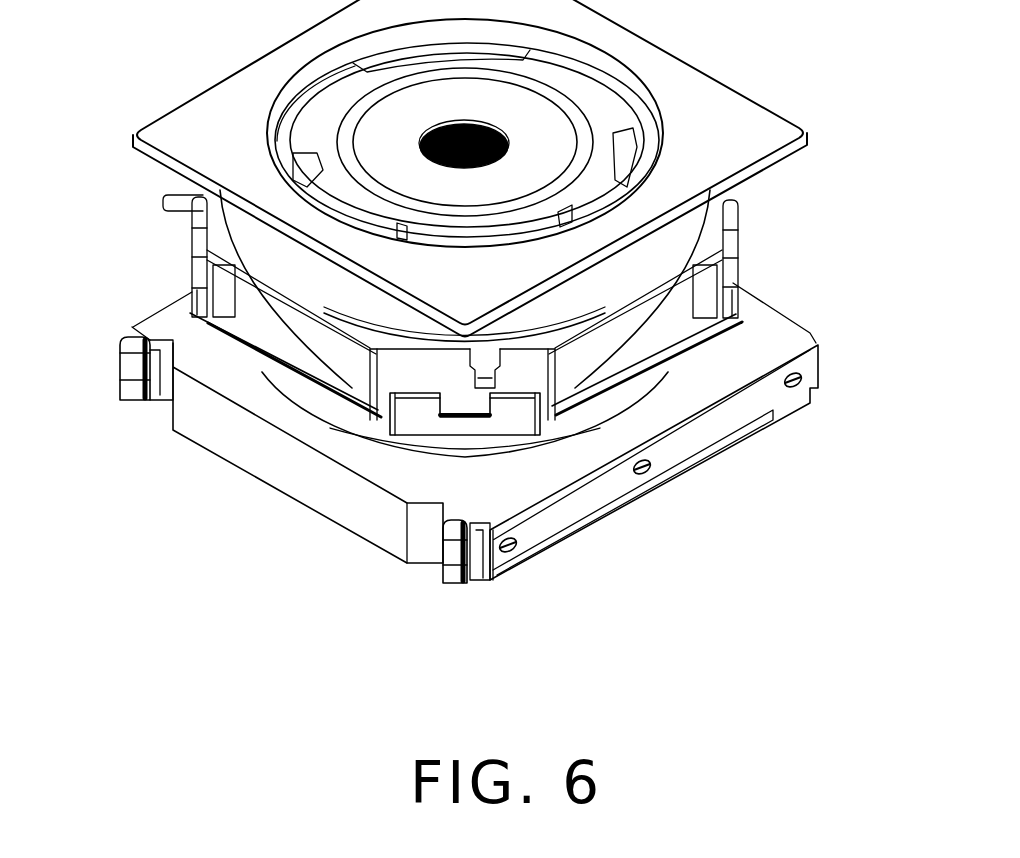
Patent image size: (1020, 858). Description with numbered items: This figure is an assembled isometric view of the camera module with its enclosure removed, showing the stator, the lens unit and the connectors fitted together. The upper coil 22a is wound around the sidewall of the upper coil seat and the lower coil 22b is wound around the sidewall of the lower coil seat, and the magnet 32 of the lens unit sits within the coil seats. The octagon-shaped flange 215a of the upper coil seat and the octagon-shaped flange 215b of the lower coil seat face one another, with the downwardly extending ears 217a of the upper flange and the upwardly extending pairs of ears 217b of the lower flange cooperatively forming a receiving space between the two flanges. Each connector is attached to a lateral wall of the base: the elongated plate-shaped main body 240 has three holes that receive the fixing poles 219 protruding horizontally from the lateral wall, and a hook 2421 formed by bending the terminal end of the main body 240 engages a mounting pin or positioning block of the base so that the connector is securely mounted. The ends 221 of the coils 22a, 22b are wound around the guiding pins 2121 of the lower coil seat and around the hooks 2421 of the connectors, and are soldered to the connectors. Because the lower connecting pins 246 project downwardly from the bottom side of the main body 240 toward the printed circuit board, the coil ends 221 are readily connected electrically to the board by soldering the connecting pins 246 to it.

The upper coil 22a is at (683, 232).
The lower coil 22b is at (647, 383).
The magnet 32 is at (250, 305).
The flange 215a is at (205, 258).
The flange 215b is at (290, 362).
The ears 217a is at (372, 362).
The ears 217b is at (380, 392).
The ends of the coils 221 is at (119, 387).
The guiding pins 2121 is at (447, 535).
The hook 2421 is at (447, 577).
The fixing poles 219 is at (513, 550).
The main body 240 is at (693, 440).
The connecting pins 246 is at (795, 398).